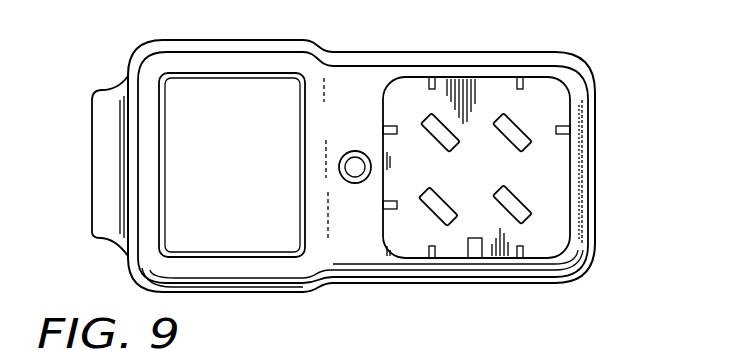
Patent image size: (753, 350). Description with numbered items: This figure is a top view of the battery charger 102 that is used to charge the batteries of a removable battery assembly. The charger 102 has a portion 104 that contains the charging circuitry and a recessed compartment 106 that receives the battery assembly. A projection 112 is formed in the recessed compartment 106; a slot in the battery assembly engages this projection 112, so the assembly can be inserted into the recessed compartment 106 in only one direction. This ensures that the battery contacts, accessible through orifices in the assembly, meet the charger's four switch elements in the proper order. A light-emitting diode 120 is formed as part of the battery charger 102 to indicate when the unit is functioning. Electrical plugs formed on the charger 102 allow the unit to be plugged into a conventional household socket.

The battery charger 102 is at (548, 43).
The portion for containing the circuitry 104 is at (243, 244).
The recessed compartment 106 is at (550, 100).
The projection 112 is at (470, 246).
The light-emitting diode 120 is at (354, 151).